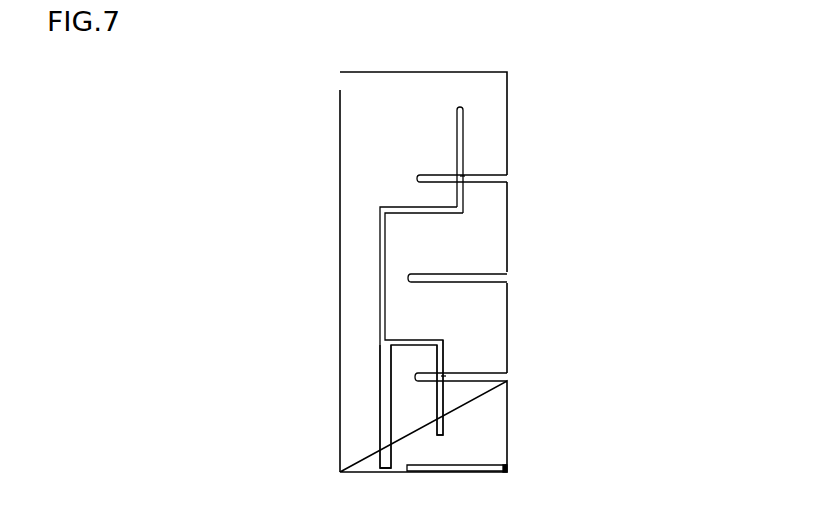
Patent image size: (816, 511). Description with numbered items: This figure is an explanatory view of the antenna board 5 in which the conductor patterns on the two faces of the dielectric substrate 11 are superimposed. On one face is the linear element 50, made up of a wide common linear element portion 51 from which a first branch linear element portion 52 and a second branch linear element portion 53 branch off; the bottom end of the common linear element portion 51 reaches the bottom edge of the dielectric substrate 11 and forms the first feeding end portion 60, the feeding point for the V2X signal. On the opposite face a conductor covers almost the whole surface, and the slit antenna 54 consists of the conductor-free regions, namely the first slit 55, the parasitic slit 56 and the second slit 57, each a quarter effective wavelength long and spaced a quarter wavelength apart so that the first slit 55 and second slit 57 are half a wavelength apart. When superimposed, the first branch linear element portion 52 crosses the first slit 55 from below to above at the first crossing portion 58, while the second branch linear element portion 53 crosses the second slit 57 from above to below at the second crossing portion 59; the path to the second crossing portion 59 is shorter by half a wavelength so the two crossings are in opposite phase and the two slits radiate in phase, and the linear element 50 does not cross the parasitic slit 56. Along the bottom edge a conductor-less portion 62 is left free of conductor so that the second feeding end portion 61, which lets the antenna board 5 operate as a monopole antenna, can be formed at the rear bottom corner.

The antenna board 5 is at (340, 123).
The dielectric substrate 11 is at (507, 113).
The linear element 50 is at (381, 293).
The common linear element portion 51 is at (382, 387).
The first branch linear element portion 52 is at (457, 133).
The second branch linear element portion 53 is at (436, 410).
The slit antenna 54 is at (665, 203).
The first slit 55 is at (507, 178).
The parasitic slit 56 is at (507, 278).
The second slit 57 is at (507, 380).
The first crossing portion 58 is at (462, 176).
The second crossing portion 59 is at (444, 377).
The first feeding end portion 60 is at (386, 468).
The second feeding end portion 61 is at (507, 466).
The conductor-less portion 62 is at (473, 471).